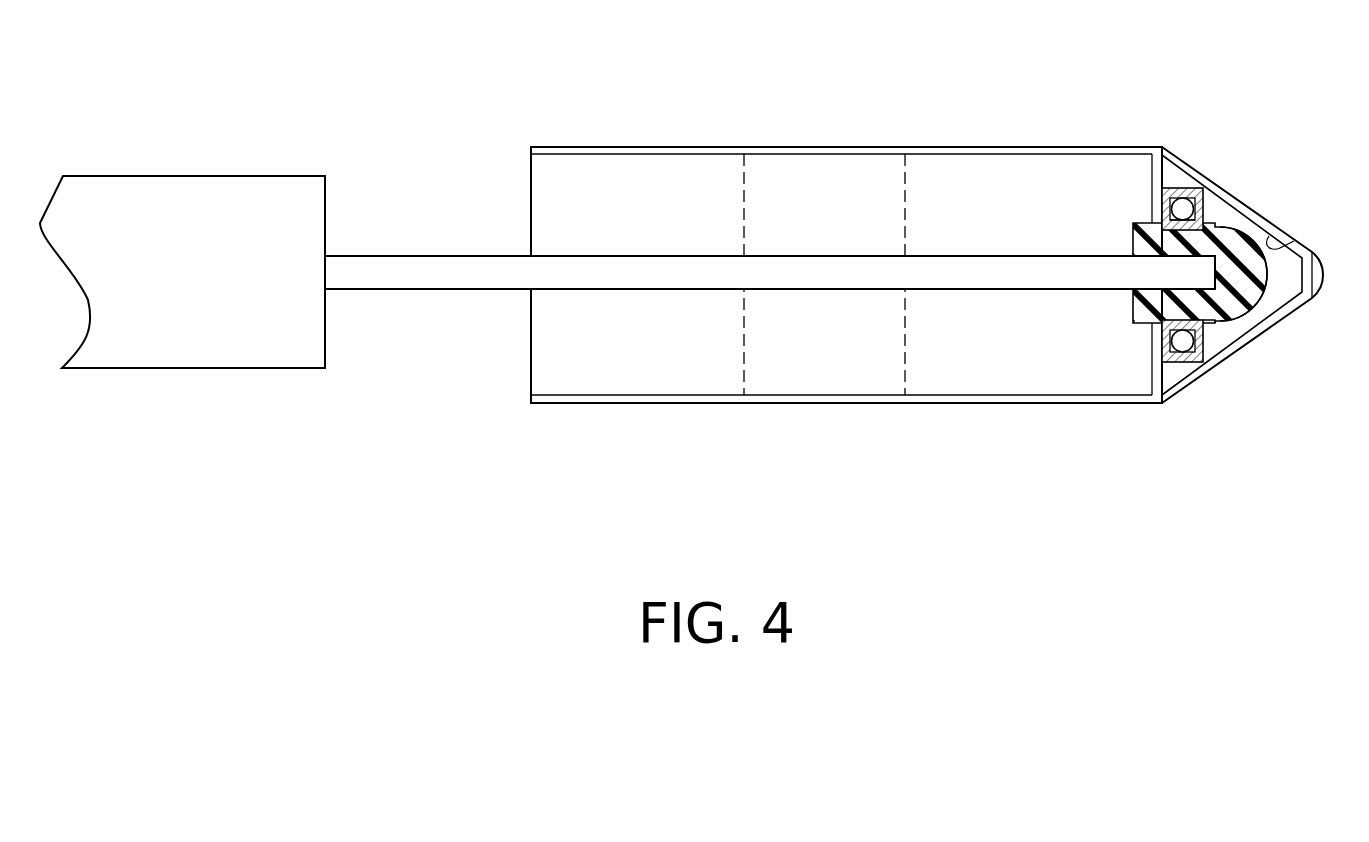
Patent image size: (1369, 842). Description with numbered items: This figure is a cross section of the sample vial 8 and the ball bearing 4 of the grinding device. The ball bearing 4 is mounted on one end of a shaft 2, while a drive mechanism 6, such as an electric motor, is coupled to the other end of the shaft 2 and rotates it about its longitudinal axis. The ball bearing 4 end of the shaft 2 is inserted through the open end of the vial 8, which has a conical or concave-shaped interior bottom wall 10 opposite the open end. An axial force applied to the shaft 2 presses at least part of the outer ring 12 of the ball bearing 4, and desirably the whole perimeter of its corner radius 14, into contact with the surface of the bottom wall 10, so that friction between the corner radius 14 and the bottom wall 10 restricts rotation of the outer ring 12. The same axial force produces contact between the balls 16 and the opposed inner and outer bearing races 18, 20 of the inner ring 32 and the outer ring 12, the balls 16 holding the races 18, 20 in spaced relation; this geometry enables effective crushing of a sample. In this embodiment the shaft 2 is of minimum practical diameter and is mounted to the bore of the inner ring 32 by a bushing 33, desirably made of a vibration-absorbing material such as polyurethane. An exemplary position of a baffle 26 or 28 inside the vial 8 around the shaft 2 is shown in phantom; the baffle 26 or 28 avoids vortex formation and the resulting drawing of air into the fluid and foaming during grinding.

The shaft 2 is at (390, 270).
The ball bearing 4 is at (1212, 335).
The drive mechanism 6 is at (198, 228).
The sample vial 8 is at (772, 145).
The bottom wall 10 is at (1295, 240).
The outer ring 12 is at (1183, 362).
The corner radius 14 is at (1202, 217).
The balls 16 is at (1183, 198).
The inner bearing race 18 is at (1157, 146).
The outer bearing race 20 is at (1180, 389).
The first embodiment baffle 26 is at (829, 325).
The second embodiment baffle 28 is at (905, 373).
The inner ring 32 is at (1203, 225).
The bushing 33 is at (1270, 293).